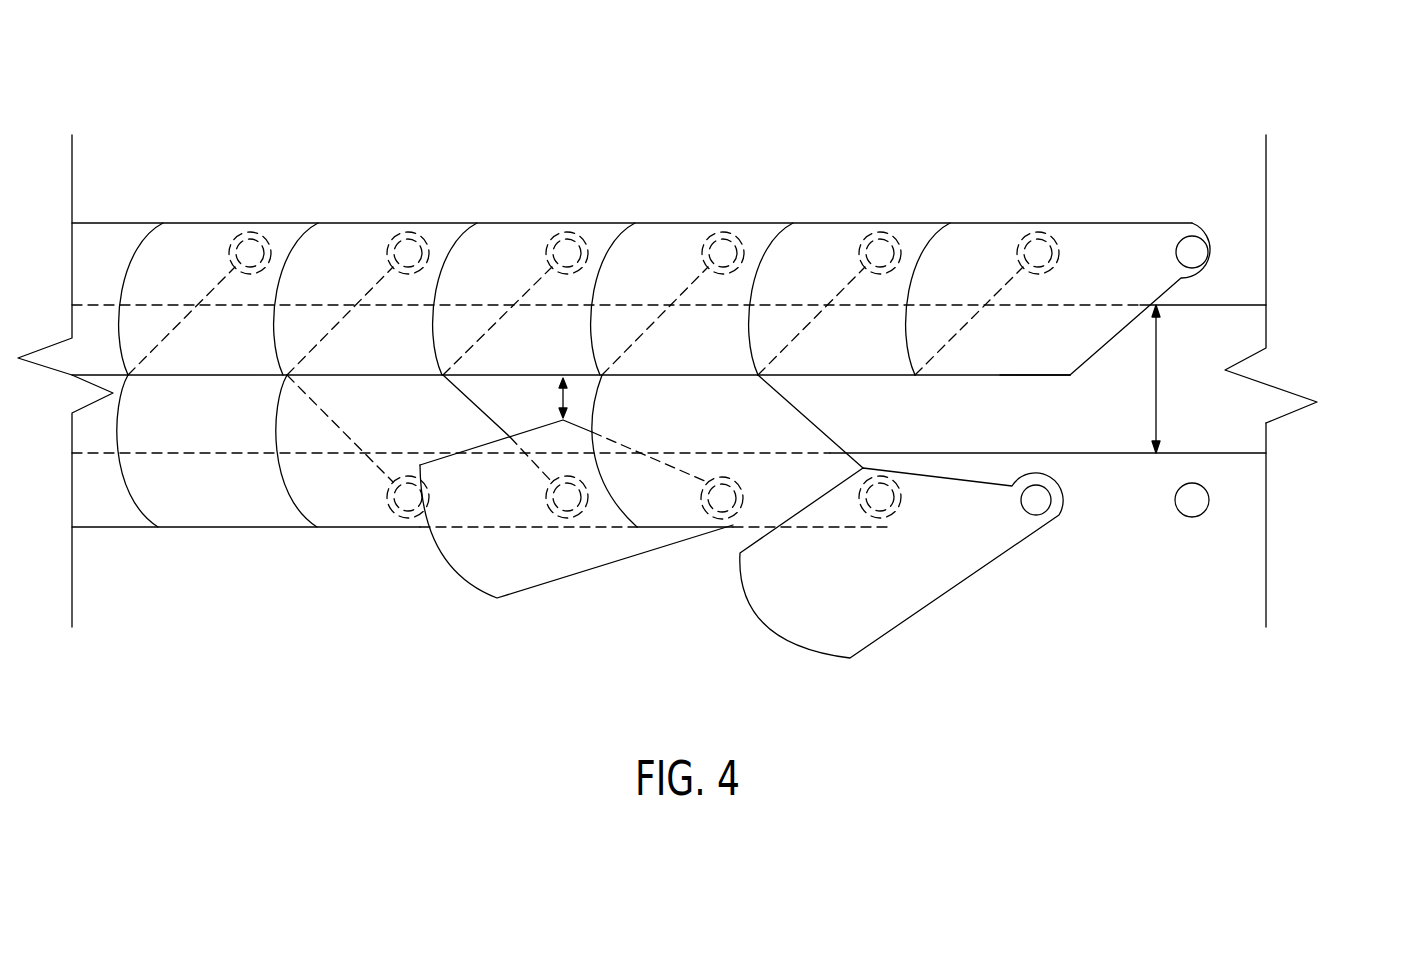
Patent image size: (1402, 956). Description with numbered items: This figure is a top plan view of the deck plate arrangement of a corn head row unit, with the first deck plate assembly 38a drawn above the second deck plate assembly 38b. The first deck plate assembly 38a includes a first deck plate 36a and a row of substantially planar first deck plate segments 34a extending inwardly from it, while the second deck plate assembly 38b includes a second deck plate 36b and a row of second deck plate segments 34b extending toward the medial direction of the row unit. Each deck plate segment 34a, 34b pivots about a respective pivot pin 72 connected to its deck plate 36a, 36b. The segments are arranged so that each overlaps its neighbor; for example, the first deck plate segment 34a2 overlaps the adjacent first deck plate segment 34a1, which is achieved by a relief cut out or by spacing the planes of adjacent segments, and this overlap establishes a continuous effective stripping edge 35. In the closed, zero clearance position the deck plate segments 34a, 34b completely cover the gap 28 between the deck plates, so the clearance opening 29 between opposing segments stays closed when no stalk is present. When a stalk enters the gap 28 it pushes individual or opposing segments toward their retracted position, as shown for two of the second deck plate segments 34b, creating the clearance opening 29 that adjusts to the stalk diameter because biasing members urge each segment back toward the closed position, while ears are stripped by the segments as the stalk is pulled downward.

The gap 28 is at (1160, 380).
The clearance opening 29 is at (575, 398).
The first deck plate segment 34a is at (185, 238).
The first deck plate segment 34a1 is at (820, 238).
The first deck plate segment 34a2 is at (997, 238).
The second deck plate segment 34b is at (202, 498).
The stripping edge 35 is at (932, 378).
The first deck plate 36a is at (1247, 305).
The second deck plate 36b is at (1237, 455).
The first deck plate assembly 38a is at (1303, 155).
The second deck plate assembly 38b is at (1303, 453).
The pivot pin 72 is at (402, 252).